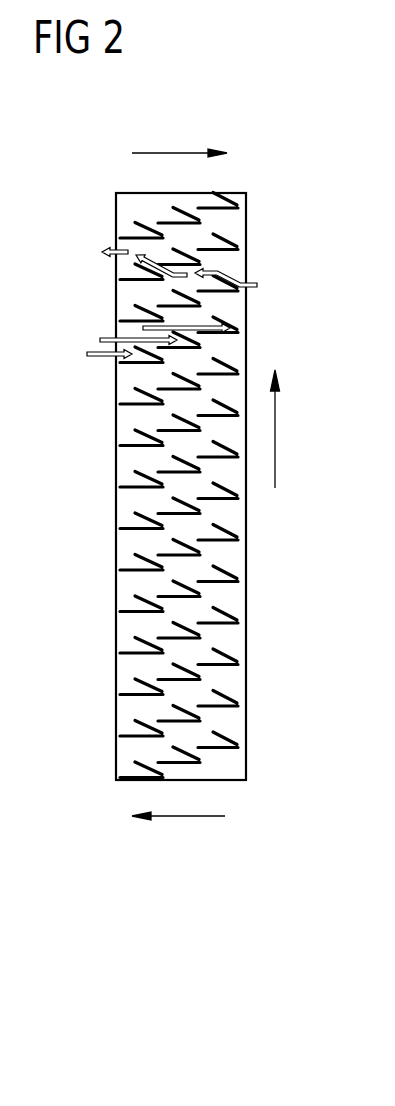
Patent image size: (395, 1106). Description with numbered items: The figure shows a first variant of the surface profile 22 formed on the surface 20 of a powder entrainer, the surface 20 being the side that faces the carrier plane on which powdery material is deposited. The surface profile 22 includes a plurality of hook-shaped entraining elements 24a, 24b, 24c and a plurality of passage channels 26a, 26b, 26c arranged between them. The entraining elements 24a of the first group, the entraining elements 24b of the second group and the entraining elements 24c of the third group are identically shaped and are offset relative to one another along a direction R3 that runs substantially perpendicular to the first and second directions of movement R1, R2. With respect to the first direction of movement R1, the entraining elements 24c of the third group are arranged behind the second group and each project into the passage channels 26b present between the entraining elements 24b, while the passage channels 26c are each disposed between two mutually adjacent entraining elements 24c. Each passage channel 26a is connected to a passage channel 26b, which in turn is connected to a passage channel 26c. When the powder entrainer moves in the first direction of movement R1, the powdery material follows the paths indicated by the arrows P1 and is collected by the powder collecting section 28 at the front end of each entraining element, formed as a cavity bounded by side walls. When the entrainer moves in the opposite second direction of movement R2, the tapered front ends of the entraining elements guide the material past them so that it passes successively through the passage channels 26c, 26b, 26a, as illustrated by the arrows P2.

The surface 20 is at (133, 208).
The surface profile 22 is at (237, 192).
The entraining elements of the first group 24a is at (136, 733).
The entraining elements of the second group 24b is at (185, 720).
The entraining elements of the third group 24c is at (230, 710).
The passage channels 26a is at (127, 675).
The passage channels 26b is at (172, 618).
The passage channels 26c is at (175, 657).
The powder collecting section 28 is at (200, 575).
The arrows P1 is at (148, 316).
The arrows P2 is at (112, 248).
The first direction of movement R1 is at (188, 818).
The second direction of movement R2 is at (167, 150).
The direction R3 is at (275, 436).